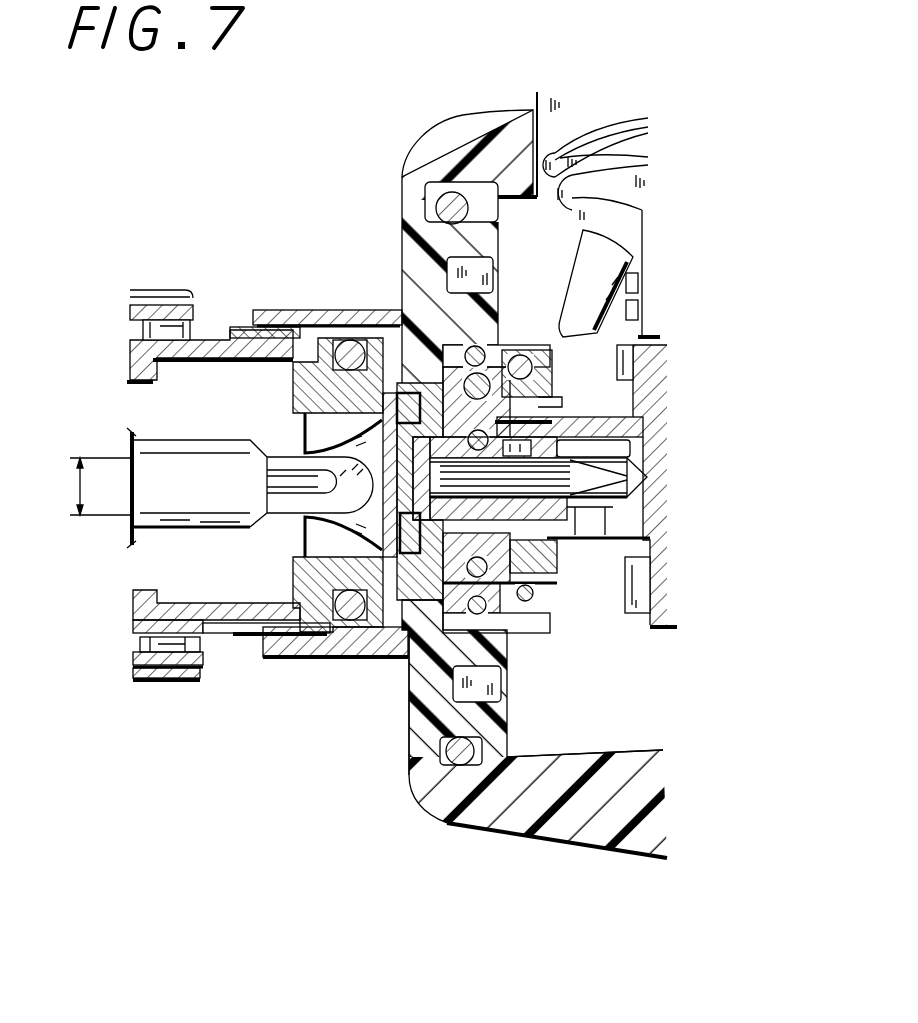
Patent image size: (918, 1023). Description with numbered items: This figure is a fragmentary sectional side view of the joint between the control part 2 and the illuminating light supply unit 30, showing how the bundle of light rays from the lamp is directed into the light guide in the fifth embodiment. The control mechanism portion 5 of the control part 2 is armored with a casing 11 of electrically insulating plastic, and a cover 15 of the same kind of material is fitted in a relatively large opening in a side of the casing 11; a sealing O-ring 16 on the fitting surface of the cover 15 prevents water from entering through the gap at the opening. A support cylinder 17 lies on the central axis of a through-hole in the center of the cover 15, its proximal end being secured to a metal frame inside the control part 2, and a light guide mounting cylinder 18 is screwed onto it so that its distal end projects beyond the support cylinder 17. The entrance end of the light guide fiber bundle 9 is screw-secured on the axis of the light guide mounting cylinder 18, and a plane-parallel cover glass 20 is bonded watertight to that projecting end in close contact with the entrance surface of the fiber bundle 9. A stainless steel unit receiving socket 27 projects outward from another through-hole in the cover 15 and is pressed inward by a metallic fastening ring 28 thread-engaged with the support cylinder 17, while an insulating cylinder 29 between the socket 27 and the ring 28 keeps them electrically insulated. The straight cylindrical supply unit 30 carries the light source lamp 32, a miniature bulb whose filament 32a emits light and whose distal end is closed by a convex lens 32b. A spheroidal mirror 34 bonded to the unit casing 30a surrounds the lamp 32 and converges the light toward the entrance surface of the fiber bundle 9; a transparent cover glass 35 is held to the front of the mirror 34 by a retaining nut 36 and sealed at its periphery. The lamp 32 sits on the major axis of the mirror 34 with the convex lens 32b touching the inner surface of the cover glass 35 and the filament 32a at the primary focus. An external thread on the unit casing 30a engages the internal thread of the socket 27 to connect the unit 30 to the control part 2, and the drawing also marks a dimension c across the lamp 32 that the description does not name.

The control part 2 is at (406, 118).
The control mechanism portion 5 is at (418, 832).
The light guide fiber bundle 9 is at (575, 470).
The casing 11 is at (557, 835).
The cover 15 is at (417, 720).
The sealing O-ring 16 is at (410, 767).
The support cylinder 17 is at (628, 430).
The light guide mounting cylinder 18 is at (567, 515).
The plane-parallel cover glass 20 is at (407, 655).
The unit receiving socket 27 is at (317, 317).
The fastening ring 28 is at (497, 380).
The insulating cylinder 29 is at (527, 392).
The illuminating light supply unit 30 is at (109, 236).
The unit casing 30a is at (287, 317).
The light source lamp 32 is at (287, 517).
The filament 32a is at (327, 473).
The convex lens 32b is at (295, 413).
The spheroidal mirror 34 is at (333, 543).
The transparent cover glass 35 is at (400, 383).
The retaining nut 36 is at (396, 332).
The clearance c is at (94, 486).